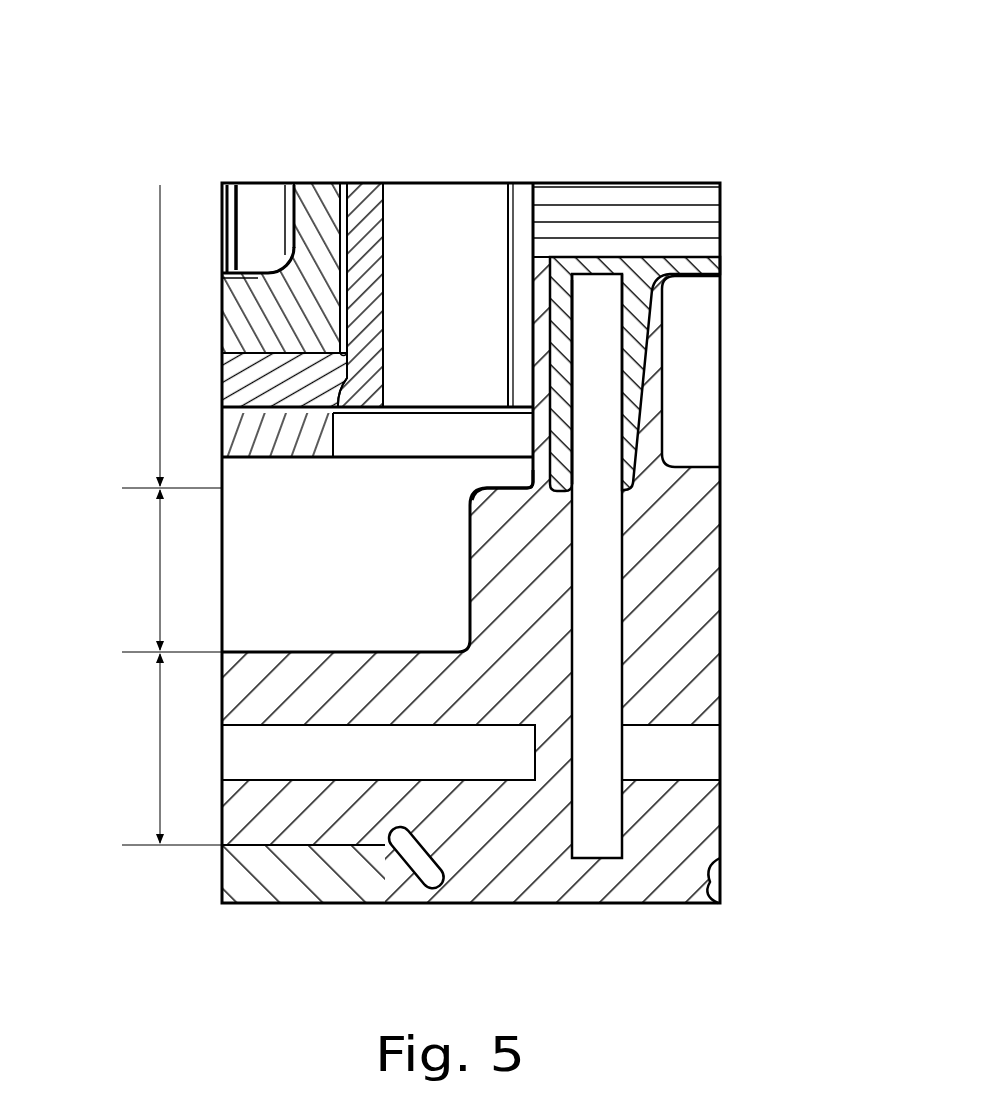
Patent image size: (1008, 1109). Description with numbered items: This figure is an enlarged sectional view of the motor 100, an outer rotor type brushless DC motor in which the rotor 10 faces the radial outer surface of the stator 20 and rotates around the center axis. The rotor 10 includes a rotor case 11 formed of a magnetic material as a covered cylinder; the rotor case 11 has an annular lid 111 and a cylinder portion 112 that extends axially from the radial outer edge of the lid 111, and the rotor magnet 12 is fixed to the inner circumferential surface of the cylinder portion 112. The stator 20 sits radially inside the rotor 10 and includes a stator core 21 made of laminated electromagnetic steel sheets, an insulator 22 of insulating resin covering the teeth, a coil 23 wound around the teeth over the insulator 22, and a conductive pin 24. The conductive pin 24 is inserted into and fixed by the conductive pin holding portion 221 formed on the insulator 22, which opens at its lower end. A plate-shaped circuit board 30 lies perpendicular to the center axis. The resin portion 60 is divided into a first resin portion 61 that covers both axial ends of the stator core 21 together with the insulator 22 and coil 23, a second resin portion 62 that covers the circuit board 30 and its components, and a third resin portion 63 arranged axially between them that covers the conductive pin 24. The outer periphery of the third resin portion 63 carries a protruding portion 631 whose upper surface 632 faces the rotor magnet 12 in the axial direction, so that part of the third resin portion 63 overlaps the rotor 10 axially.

The motor 100 is at (529, 178).
The rotor 10 is at (470, 178).
The rotor case 11 is at (322, 210).
The lid 111 is at (358, 198).
The cylinder portion 112 is at (220, 381).
The rotor magnet 12 is at (433, 200).
The stator 20 is at (711, 181).
The stator core 21 is at (637, 197).
The insulator 22 is at (643, 353).
The conductive pin holding portion 221 is at (578, 374).
The coil 23 is at (697, 302).
The conductive pin 24 is at (600, 833).
The circuit board 30 is at (318, 767).
The resin portion 60 is at (725, 572).
The first resin portion 61 is at (172, 336).
The second resin portion 62 is at (172, 749).
The third resin portion 63 is at (172, 571).
The protruding portion 631 is at (467, 558).
The upper surface 632 is at (503, 470).